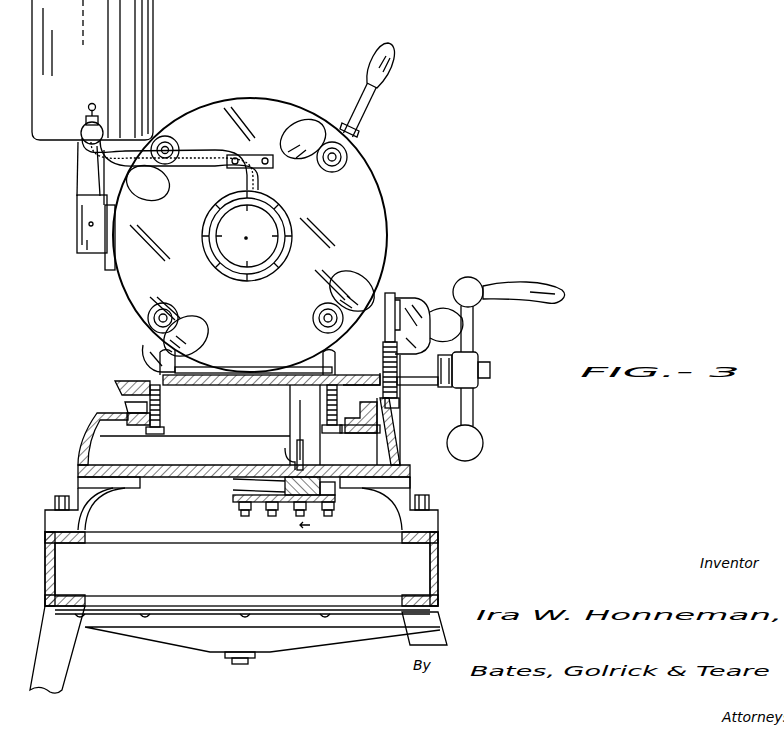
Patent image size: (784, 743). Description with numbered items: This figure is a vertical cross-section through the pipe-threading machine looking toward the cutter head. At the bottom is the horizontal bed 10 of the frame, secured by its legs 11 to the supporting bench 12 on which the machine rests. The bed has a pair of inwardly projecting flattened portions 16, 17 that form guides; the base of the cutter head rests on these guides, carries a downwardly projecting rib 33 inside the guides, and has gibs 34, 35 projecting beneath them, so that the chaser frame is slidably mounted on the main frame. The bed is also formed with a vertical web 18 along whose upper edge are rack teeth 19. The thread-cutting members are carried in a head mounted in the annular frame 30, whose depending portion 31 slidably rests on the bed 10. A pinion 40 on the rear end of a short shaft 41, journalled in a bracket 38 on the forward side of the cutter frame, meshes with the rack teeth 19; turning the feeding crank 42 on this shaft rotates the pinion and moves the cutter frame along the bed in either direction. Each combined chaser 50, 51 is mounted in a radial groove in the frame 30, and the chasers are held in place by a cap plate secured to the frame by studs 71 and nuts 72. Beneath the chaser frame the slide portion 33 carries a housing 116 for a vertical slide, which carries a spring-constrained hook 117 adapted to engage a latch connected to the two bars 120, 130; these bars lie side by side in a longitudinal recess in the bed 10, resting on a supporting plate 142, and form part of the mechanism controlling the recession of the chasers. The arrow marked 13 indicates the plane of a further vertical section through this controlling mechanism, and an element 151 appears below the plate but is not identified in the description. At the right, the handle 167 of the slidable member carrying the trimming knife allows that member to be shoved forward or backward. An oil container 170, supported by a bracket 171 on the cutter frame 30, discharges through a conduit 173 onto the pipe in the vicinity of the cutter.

The horizontal bed 10 is at (215, 462).
The legs 11 is at (439, 518).
The supporting bench 12 is at (438, 560).
The central post 13 is at (307, 405).
The inwardly projecting flattened portion 16 is at (360, 426).
The inwardly projecting flattened portion 17 is at (135, 405).
The vertical web 18 is at (393, 433).
The rack teeth 19 is at (399, 402).
The annular frame 30 is at (387, 229).
The depending portion 31 is at (143, 352).
The downwardly projecting rib 33 is at (161, 407).
The gib 34 is at (348, 427).
The gib 35 is at (150, 426).
The bracket 38 is at (406, 308).
The pinion 40 is at (397, 367).
The short shaft 41 is at (491, 368).
The feeding crank 42 is at (543, 285).
The combined chaser 50 is at (289, 238).
The combined chaser 51 is at (284, 252).
The studs 71 is at (342, 157).
The nuts 72 is at (348, 166).
The housing 116 is at (297, 441).
The hook 117 is at (285, 455).
The bar 120 is at (332, 495).
The bar 130 is at (283, 483).
The supporting plate 142 is at (235, 502).
The flange bolt 151 is at (332, 517).
The handle 167 is at (452, 316).
The oil container 170 is at (187, 108).
The bracket 171 is at (82, 232).
The conduit 173 is at (205, 151).